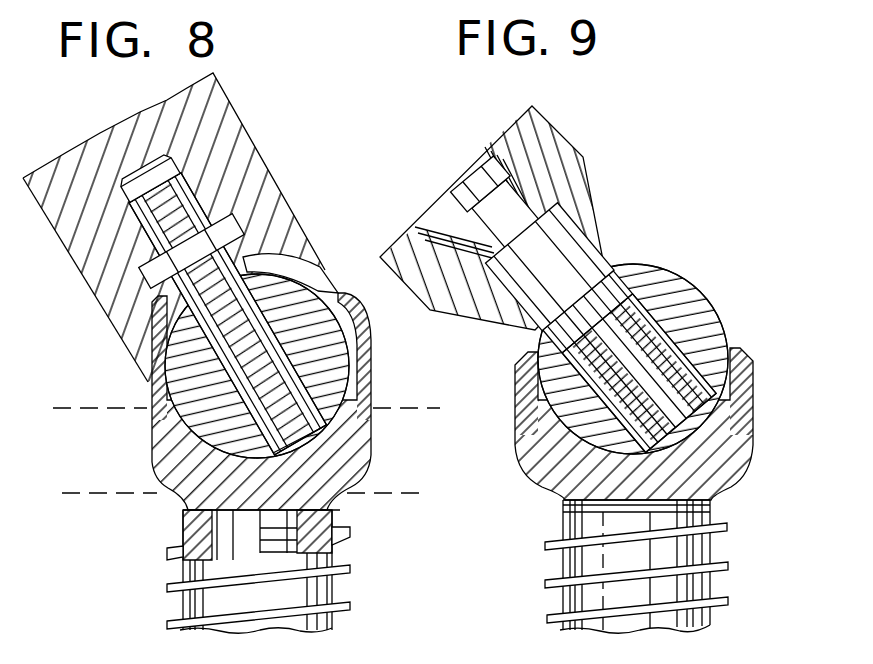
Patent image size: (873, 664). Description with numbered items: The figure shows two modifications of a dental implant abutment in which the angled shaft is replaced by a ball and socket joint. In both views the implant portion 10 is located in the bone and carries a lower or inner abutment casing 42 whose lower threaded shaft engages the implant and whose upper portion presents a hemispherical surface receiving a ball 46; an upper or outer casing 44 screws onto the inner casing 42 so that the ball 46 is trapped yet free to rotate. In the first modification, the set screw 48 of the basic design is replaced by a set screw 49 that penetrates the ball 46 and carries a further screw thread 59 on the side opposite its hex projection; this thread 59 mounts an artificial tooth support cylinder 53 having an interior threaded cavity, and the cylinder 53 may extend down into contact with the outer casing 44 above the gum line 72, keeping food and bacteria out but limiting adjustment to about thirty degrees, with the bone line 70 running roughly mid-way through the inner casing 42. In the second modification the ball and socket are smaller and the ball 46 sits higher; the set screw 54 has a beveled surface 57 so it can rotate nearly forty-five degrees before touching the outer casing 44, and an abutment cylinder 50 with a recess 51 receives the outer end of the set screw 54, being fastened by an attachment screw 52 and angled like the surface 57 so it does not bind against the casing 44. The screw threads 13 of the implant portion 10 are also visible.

In FIG. 8, the implant portion 10 is at (152, 571).
In FIG. 9, the implant portion 10 is at (737, 576).
In FIG. 8, the screw threads 13 is at (172, 620).
In FIG. 9, the screw threads 13 is at (552, 574).
In FIG. 8, the lower or inner abutment casing 42 is at (185, 484).
In FIG. 9, the lower or inner abutment casing 42 is at (550, 472).
In FIG. 8, the upper or outer casing 44 is at (147, 380).
In FIG. 9, the upper or outer casing 44 is at (753, 415).
In FIG. 8, the ball 46 is at (340, 360).
In FIG. 9, the ball 46 is at (687, 296).
In FIG. 8, the set screw 48 is at (293, 433).
In FIG. 8, the set screw 49 is at (158, 285).
In FIG. 9, the abutment cylinder 50 is at (562, 148).
In FIG. 9, the recess 51 is at (490, 302).
In FIG. 9, the attachment screw 52 is at (482, 178).
In FIG. 8, the artificial tooth support cylinder 53 is at (238, 132).
In FIG. 9, the set screw 54 is at (590, 208).
In FIG. 9, the beveled surface 57 is at (603, 240).
In FIG. 8, the screw thread 59 is at (197, 197).
In FIG. 8, the bone line 70 is at (72, 493).
In FIG. 8, the gum line 72 is at (65, 408).